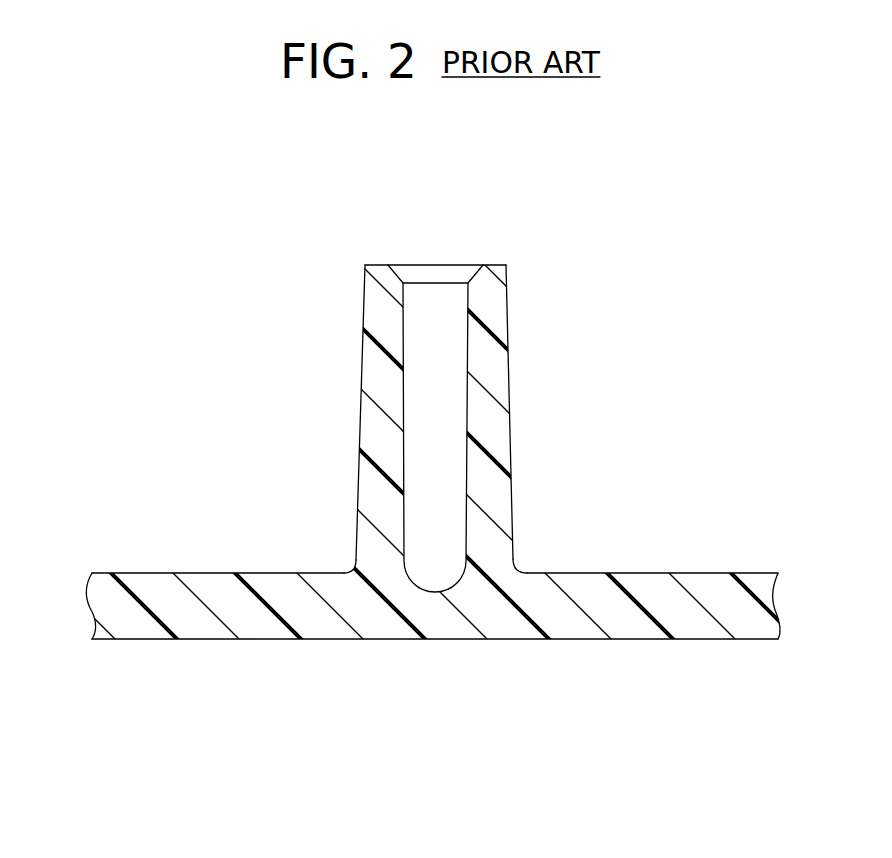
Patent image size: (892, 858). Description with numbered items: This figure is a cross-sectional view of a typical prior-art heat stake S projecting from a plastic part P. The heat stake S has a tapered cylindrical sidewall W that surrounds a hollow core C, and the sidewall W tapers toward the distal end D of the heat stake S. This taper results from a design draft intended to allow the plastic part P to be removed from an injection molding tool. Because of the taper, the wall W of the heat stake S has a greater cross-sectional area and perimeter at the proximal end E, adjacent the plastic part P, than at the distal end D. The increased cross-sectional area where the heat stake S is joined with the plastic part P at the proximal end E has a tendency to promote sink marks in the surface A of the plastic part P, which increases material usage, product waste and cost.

The heat stake S is at (320, 353).
The distal end D is at (363, 273).
The hollow core C is at (438, 352).
The sidewall W is at (488, 421).
The proximal end E is at (360, 563).
The plastic part P is at (653, 583).
The surface A is at (262, 639).